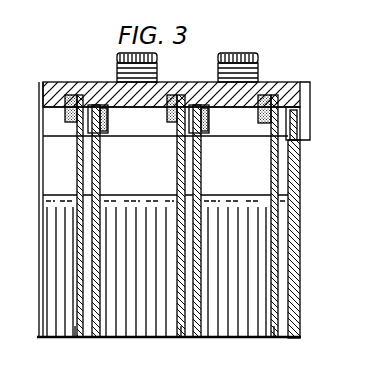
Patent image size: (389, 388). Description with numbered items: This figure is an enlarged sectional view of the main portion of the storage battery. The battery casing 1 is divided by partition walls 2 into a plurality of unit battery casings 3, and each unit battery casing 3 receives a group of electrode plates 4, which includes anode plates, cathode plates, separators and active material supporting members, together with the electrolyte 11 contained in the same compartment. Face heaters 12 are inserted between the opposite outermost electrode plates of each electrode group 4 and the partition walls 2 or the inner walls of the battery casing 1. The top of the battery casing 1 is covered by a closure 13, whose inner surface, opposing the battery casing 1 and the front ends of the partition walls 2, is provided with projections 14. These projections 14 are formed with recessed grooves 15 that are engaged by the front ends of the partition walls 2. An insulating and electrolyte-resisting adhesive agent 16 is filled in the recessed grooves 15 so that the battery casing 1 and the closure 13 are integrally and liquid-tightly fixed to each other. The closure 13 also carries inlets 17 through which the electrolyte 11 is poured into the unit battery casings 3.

The battery casing 1 is at (300, 220).
The partition walls 2 is at (190, 326).
The unit battery casings 3 is at (262, 182).
The group of electrode plates 4 is at (238, 334).
The electrolyte 11 is at (268, 202).
The face heaters 12 is at (75, 326).
The closure 13 is at (300, 94).
The projections 14 is at (102, 98).
The recessed grooves 15 is at (300, 113).
The insulating and electrolyte-resisting adhesive agent 16 is at (70, 123).
The inlets 17 is at (256, 78).